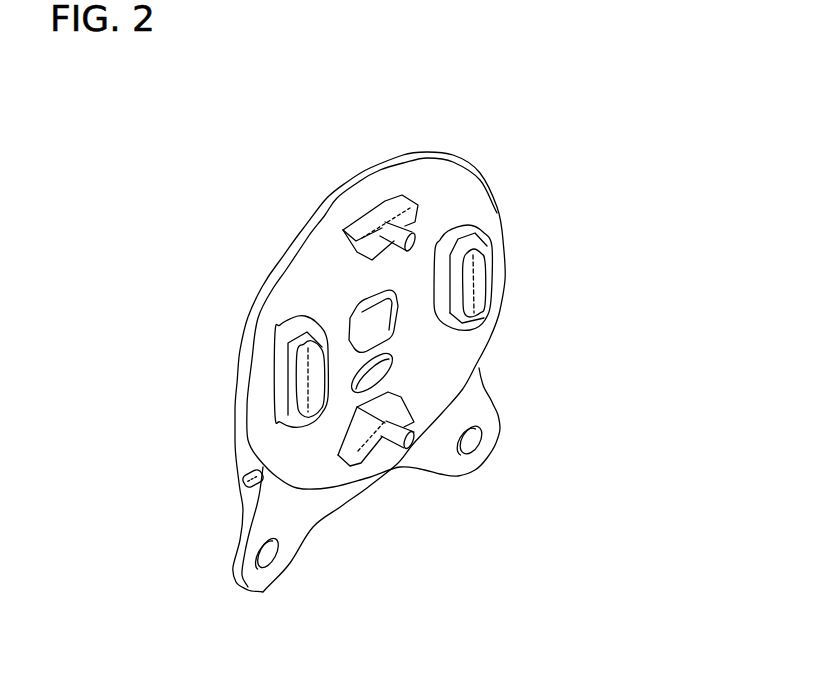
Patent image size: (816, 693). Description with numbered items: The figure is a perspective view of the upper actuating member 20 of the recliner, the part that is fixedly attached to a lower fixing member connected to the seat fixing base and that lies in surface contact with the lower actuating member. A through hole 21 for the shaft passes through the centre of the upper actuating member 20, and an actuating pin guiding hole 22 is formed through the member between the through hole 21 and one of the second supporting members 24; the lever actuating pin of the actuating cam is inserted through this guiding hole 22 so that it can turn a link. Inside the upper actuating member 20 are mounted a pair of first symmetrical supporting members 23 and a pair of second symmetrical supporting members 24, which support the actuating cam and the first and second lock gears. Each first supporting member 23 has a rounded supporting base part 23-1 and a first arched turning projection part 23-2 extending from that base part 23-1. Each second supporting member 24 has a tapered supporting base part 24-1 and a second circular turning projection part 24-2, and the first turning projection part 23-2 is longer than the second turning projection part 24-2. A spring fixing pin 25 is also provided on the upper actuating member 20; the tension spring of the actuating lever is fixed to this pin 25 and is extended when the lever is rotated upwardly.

The upper actuating member 20 is at (513, 282).
The through hole 21 is at (398, 314).
The actuating pin guiding hole 22 is at (392, 368).
The first supporting member 23 is at (293, 422).
The rounded supporting base part 23-1 is at (321, 331).
The first arched turning projection part 23-2 is at (303, 368).
The second supporting member 24 is at (380, 213).
The tapered supporting base part 24-1 is at (408, 238).
The second circular turning projection part 24-2 is at (411, 239).
The spring fixing pin 25 is at (245, 481).